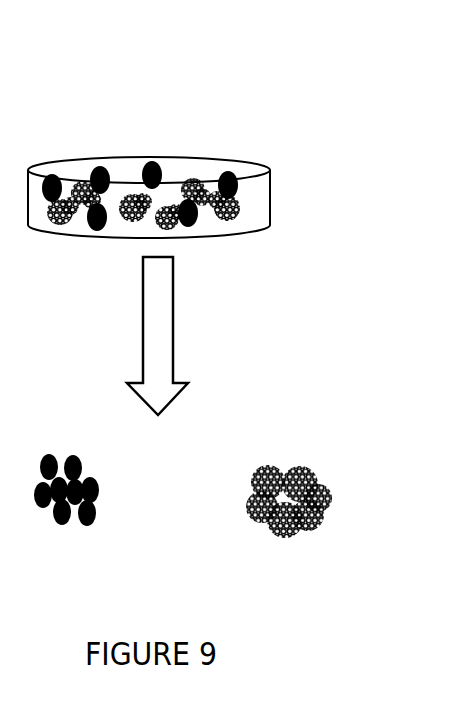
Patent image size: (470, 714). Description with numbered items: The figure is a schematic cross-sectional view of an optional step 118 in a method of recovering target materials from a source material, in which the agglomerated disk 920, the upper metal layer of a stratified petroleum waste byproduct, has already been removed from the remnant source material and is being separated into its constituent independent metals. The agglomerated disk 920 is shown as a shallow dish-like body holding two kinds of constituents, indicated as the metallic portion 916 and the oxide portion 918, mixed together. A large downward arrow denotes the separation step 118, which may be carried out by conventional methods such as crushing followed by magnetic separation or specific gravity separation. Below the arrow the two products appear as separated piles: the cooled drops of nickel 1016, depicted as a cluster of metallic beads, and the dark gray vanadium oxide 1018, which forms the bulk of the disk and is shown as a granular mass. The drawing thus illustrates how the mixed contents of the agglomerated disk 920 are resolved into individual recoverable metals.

The first cell type (ellipsoidal cells) 916 is at (157, 166).
The second cell type (bead-like cell aggregates) 918 is at (195, 168).
The agglomerated disk 920 is at (290, 196).
The optional separation step 118 is at (210, 344).
The nickel 1016 is at (66, 526).
The vanadium oxide 1018 is at (289, 531).